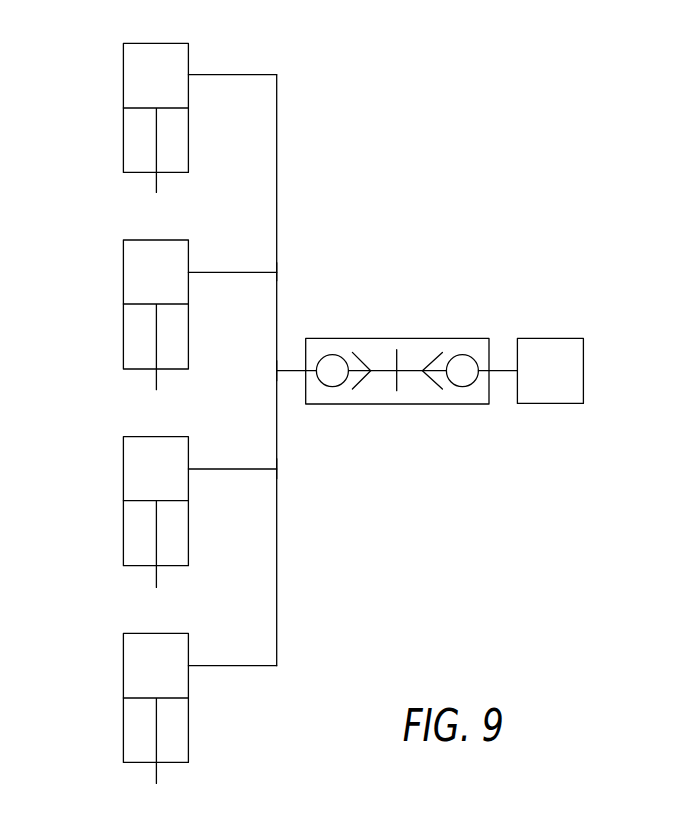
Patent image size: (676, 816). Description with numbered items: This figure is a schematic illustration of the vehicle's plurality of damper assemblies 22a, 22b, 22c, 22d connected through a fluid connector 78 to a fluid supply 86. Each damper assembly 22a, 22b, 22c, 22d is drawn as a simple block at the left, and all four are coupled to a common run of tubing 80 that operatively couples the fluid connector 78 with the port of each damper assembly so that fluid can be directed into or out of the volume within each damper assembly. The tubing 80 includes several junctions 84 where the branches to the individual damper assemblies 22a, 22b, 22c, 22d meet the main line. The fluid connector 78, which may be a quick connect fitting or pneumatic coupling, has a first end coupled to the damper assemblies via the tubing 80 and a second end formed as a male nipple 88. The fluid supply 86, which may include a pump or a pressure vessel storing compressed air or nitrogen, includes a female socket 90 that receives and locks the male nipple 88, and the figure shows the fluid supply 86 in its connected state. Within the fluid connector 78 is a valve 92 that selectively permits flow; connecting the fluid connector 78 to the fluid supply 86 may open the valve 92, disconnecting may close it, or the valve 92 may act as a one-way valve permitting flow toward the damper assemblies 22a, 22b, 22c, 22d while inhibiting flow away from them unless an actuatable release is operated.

The damper assembly 22a is at (123, 651).
The damper assembly 22b is at (123, 454).
The damper assembly 22c is at (123, 257).
The damper assembly 22d is at (123, 57).
The fluid connector 78 is at (397, 383).
The tubing 80 is at (277, 580).
The junction 84 is at (274, 270).
The fluid supply 86 is at (566, 338).
The male nipple 88 is at (375, 355).
The female socket 90 is at (415, 355).
The valve 92 is at (331, 355).